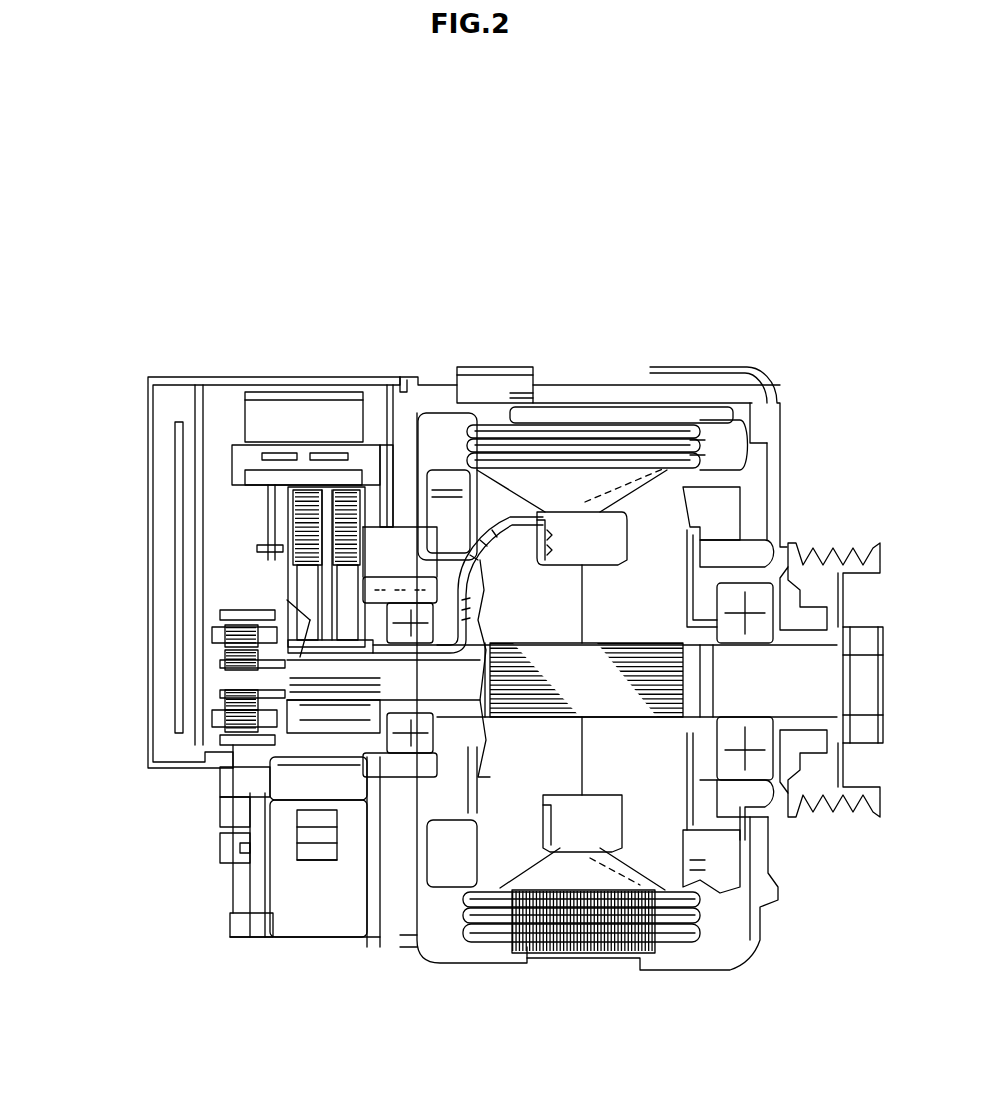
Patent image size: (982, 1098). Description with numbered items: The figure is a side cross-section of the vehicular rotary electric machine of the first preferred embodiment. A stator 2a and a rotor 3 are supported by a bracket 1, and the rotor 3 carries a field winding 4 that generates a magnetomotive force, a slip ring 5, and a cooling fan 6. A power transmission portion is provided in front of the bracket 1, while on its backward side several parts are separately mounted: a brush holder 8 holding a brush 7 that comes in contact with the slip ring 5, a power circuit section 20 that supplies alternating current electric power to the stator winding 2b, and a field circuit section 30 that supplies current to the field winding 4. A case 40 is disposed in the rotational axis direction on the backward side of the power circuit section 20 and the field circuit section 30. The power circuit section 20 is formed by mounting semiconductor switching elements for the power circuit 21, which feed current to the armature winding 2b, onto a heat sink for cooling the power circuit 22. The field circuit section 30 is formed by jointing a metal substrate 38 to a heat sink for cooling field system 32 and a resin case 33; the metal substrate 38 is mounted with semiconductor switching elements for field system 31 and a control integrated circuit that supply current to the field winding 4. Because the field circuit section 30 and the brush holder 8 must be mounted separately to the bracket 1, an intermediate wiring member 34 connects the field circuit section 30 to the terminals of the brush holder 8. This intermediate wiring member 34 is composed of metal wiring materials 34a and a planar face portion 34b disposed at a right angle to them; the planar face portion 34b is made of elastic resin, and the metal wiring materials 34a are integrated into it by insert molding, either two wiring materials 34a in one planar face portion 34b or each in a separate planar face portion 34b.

The bracket 1 is at (487, 952).
The stator 2a is at (590, 950).
The stator winding 2b is at (675, 927).
The rotor 3 is at (642, 500).
The field winding 4 is at (582, 530).
The slip ring 5 is at (226, 733).
The cooling fan 6 is at (445, 483).
The brush 7 is at (300, 657).
The brush holder 8 is at (287, 600).
The power circuit section 20 is at (132, 935).
The semiconductor switching elements for the power circuit 21 is at (300, 852).
The heat sink for cooling the power circuit 22 is at (318, 863).
The field circuit section 30 is at (455, 300).
The semiconductor switching elements for field system 31 is at (342, 460).
The heat sink for cooling field system 32 is at (330, 460).
The resin case 33 is at (243, 460).
The intermediate wiring member 34 is at (127, 333).
The metal wiring materials 34a is at (290, 480).
The planar face portion 34b is at (272, 490).
The metal substrate 38 is at (383, 475).
The case 40 is at (180, 763).